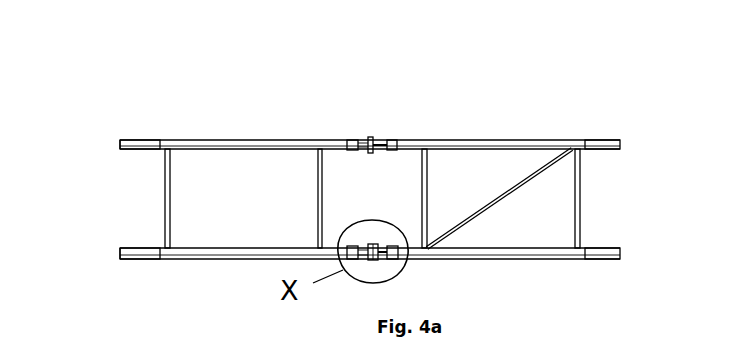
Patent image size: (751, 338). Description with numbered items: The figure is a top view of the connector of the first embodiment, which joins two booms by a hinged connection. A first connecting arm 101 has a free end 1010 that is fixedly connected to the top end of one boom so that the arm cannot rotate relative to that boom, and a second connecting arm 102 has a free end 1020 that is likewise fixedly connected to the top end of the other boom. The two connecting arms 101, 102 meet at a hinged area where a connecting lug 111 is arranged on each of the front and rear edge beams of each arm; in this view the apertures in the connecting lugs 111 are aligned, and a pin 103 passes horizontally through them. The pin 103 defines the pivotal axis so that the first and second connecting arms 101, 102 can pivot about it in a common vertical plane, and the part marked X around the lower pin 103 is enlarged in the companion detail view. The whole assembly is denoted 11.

The ladder frame 11 is at (750, 328).
The first connecting arm 101 is at (213, 142).
The second connecting arm 102 is at (532, 142).
The pin 103 is at (364, 137).
The connecting lug 111 is at (386, 138).
The free end of first connecting arm 1010 is at (118, 141).
The free end of second connecting arm 1020 is at (624, 142).